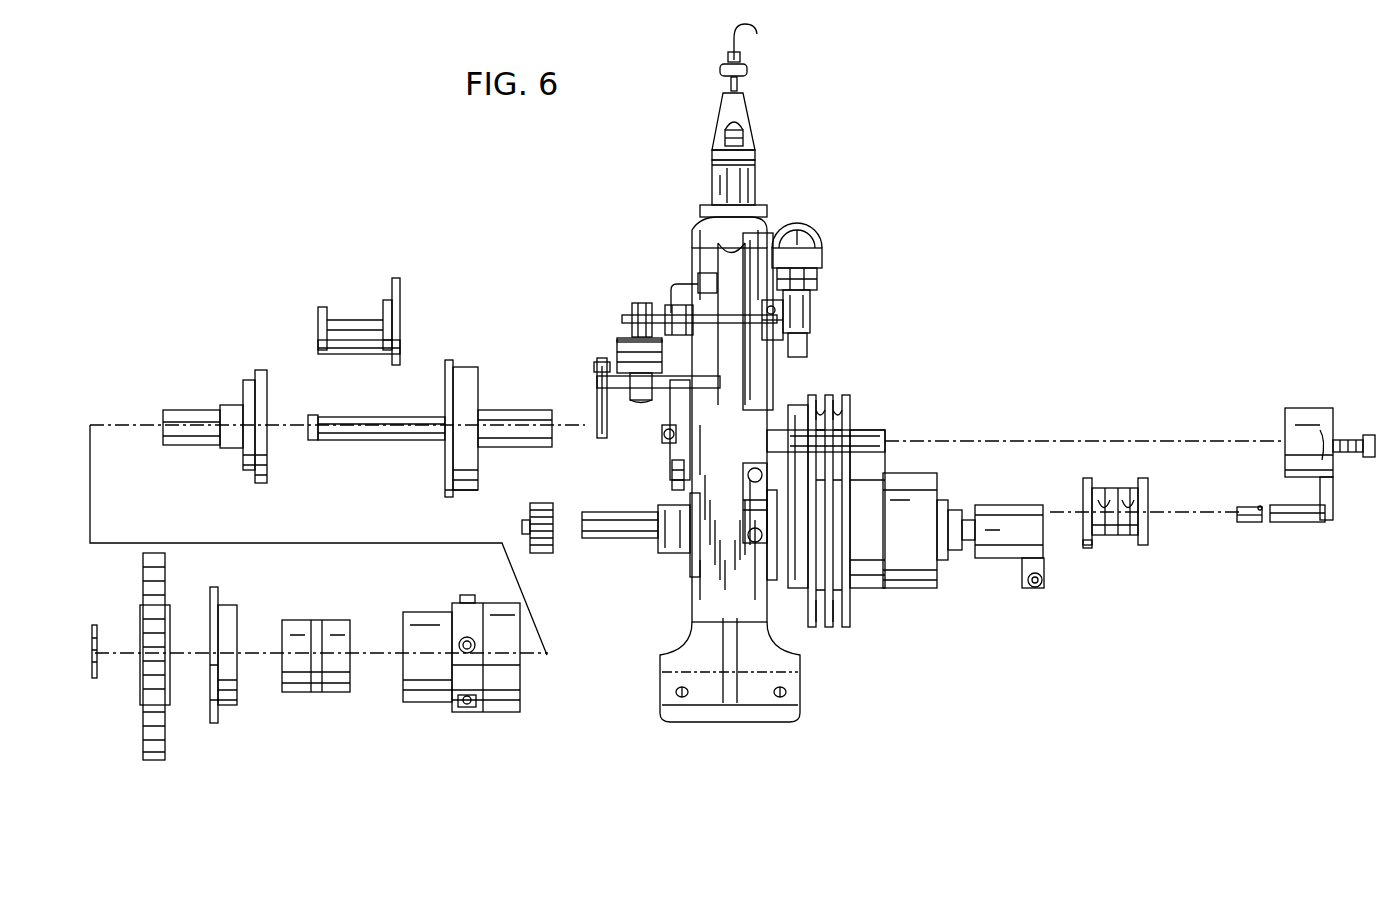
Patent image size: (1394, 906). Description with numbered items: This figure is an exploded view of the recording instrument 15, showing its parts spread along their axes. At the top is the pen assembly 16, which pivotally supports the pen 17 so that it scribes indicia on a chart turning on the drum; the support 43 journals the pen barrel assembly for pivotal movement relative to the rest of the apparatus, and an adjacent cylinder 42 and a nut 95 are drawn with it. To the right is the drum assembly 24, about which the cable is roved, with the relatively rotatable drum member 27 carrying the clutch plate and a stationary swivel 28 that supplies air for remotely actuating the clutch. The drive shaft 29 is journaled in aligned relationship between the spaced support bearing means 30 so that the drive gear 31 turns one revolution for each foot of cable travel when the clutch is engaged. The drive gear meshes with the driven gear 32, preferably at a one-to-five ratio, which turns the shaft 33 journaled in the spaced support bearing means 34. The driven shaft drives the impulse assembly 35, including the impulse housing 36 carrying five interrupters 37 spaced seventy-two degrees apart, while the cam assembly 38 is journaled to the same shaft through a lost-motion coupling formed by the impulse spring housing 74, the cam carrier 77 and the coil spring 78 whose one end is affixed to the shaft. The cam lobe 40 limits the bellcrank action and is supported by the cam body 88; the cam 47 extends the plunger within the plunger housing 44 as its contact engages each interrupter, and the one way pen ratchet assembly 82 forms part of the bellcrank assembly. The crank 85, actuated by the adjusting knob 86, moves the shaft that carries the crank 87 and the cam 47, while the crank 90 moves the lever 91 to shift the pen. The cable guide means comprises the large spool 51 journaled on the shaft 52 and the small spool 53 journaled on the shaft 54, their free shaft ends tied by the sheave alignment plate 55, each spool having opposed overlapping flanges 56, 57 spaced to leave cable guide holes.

The invention 15 is at (687, 213).
The pen assembly 16 is at (750, 123).
The pen 17 is at (745, 47).
The drum assembly 24 is at (920, 593).
The rotatable drum member 27 is at (853, 622).
The stationary swivel 28 is at (1027, 502).
The drive shaft 29 is at (632, 545).
The support bearing means 30 is at (777, 573).
The drive gear 31 is at (542, 553).
The driven gear 32 is at (160, 758).
The shaft 33 is at (372, 440).
The support bearing means 34 is at (473, 475).
The impulse assembly 35 is at (476, 647).
The impulse housing 36 is at (460, 672).
The interrupters 37 is at (468, 597).
The cam assembly 38 is at (222, 597).
The cam lobe 40 is at (326, 312).
The cylinder 42 is at (752, 190).
The support 43 is at (702, 610).
The plunger housing 44 is at (620, 310).
The cam 47 is at (643, 303).
The large spool 51 is at (853, 410).
The shaft 52 is at (885, 430).
The small spool 53 is at (1092, 548).
The shaft 54 is at (1255, 523).
The sheave alignment plate 55 is at (1333, 510).
The flange 56 is at (1148, 485).
The flange 57 is at (848, 400).
The impulse spring housing 74 is at (505, 707).
The cam carrier 77 is at (447, 608).
The coil spring 78 is at (266, 398).
The one way pen ratchet assembly 82 is at (600, 440).
The crank 85 is at (783, 348).
The adjusting knob 86 is at (817, 230).
The crank 87 is at (673, 303).
The cam body 88 is at (359, 307).
The crank 90 is at (662, 440).
The lever 91 is at (672, 483).
The nut 95 is at (807, 300).